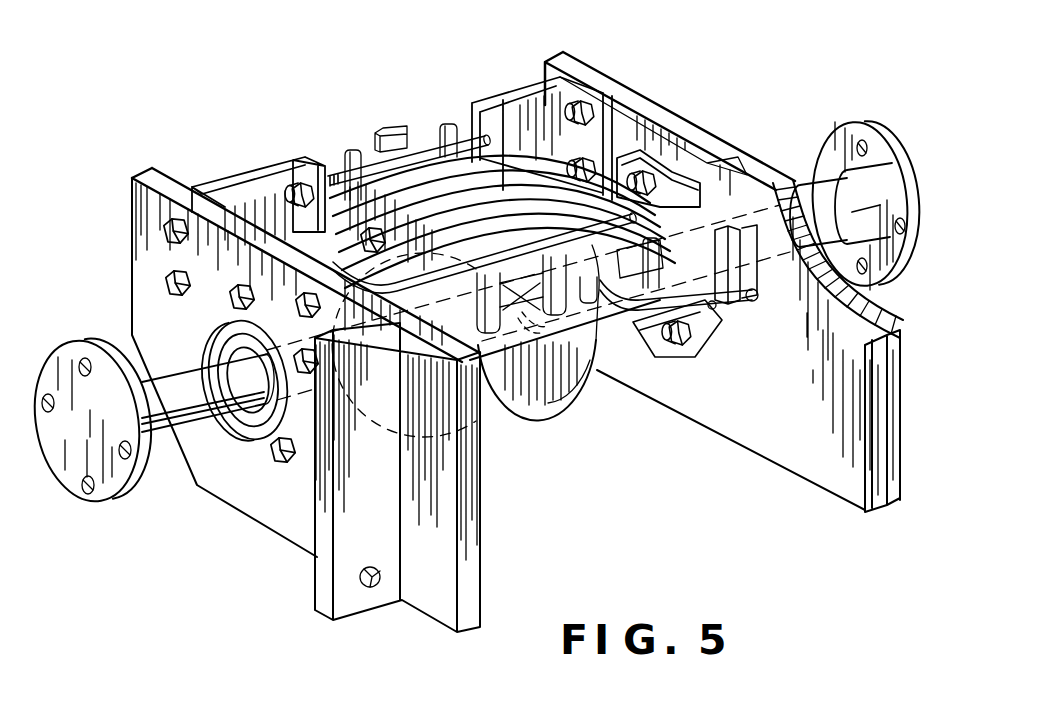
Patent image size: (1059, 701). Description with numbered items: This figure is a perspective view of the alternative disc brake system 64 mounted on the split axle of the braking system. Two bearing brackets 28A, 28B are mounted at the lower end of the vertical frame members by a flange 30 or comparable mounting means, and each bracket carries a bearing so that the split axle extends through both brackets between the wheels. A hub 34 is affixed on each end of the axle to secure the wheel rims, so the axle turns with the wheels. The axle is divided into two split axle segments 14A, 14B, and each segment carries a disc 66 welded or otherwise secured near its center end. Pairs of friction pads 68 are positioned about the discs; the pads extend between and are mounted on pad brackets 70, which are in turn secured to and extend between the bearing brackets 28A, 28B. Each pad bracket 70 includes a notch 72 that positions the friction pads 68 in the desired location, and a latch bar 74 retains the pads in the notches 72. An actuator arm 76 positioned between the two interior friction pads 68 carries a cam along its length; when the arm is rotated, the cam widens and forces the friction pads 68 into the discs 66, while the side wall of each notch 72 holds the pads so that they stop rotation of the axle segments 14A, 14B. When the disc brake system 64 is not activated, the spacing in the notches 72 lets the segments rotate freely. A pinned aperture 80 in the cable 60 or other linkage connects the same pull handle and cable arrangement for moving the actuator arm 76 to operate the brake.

The split axle segment 14A is at (810, 207).
The split axle segment 14B is at (173, 430).
The bearing bracket 28A is at (807, 460).
The bearing bracket 28B is at (250, 498).
The flange 30 is at (325, 580).
The hub 34 is at (100, 367).
The cable 60 is at (748, 258).
The disc brake system 64 is at (586, 452).
The disc 66 is at (500, 417).
The friction pads 68 is at (358, 150).
The pad brackets 70 is at (523, 110).
The notch 72 is at (600, 363).
The rod 74 is at (420, 140).
The actuator arm 76 is at (705, 332).
The pinned aperture 80 is at (716, 310).